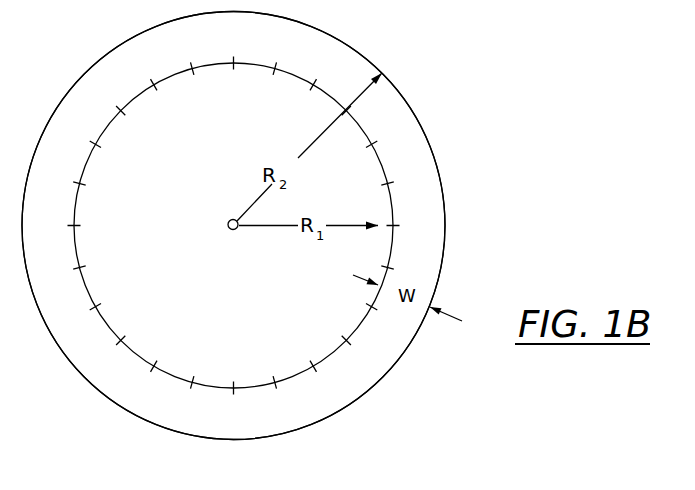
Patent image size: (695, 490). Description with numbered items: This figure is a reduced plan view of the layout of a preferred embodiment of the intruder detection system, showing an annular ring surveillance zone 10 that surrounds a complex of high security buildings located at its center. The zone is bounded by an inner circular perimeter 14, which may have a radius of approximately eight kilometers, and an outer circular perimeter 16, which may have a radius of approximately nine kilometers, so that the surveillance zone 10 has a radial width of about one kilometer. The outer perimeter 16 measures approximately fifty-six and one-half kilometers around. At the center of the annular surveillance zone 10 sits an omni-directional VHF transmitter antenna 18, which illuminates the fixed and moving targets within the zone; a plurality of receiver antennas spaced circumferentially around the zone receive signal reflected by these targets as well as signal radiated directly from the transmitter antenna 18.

The annular ring surveillance zone 10 is at (283, 437).
The inner circular perimeter 14 is at (360, 314).
The outer circular perimeter 16 is at (445, 249).
The omni-directional VHF transmitter antenna 18 is at (228, 224).